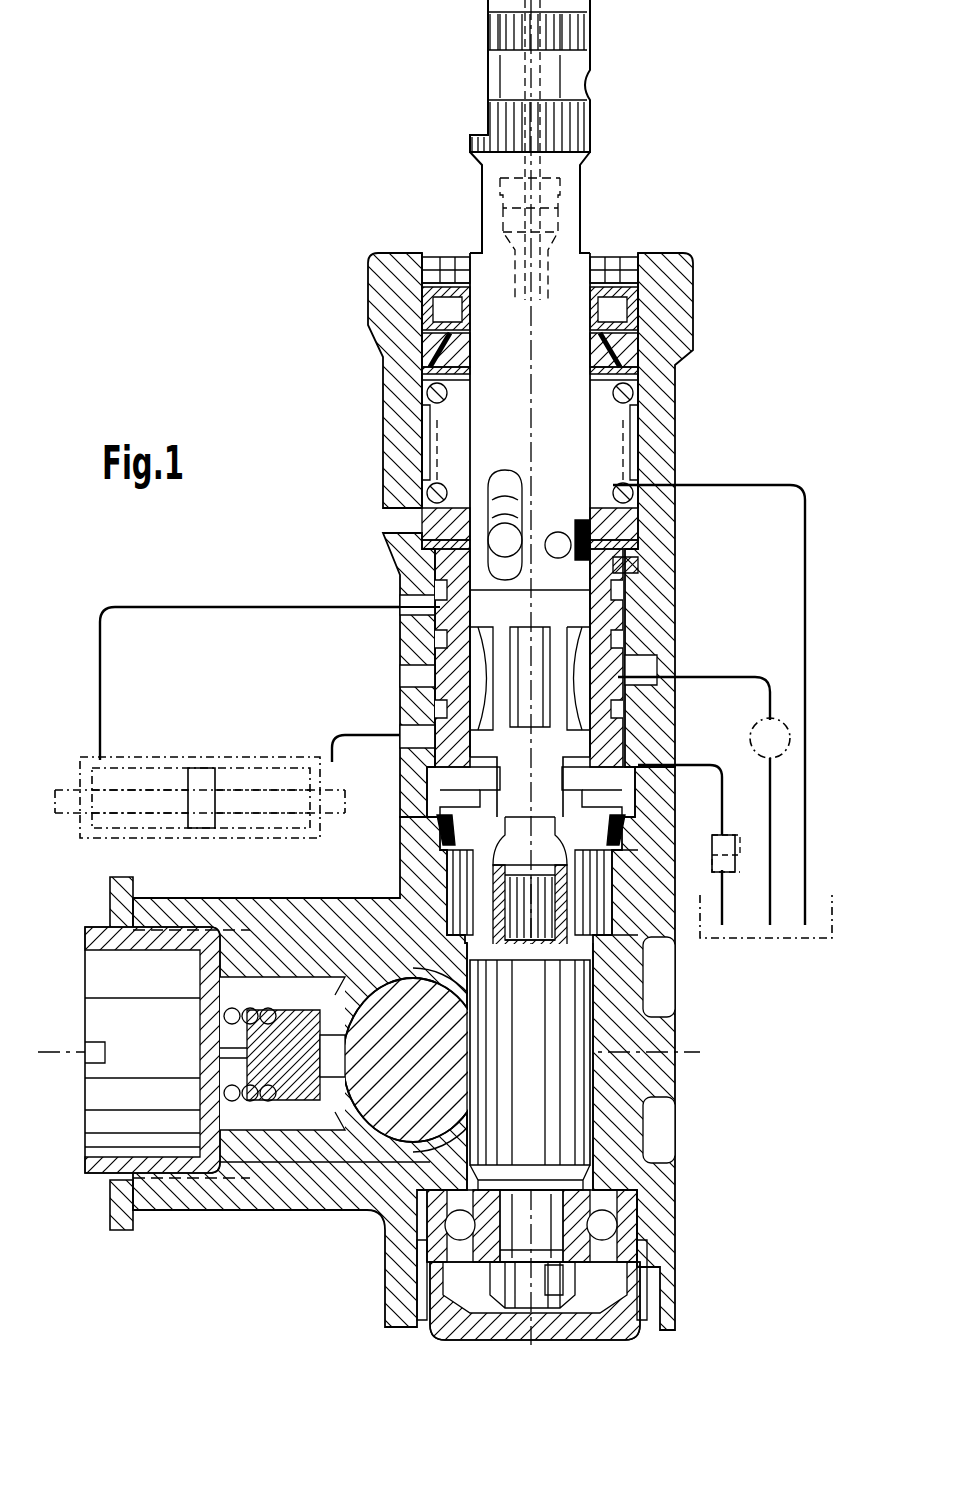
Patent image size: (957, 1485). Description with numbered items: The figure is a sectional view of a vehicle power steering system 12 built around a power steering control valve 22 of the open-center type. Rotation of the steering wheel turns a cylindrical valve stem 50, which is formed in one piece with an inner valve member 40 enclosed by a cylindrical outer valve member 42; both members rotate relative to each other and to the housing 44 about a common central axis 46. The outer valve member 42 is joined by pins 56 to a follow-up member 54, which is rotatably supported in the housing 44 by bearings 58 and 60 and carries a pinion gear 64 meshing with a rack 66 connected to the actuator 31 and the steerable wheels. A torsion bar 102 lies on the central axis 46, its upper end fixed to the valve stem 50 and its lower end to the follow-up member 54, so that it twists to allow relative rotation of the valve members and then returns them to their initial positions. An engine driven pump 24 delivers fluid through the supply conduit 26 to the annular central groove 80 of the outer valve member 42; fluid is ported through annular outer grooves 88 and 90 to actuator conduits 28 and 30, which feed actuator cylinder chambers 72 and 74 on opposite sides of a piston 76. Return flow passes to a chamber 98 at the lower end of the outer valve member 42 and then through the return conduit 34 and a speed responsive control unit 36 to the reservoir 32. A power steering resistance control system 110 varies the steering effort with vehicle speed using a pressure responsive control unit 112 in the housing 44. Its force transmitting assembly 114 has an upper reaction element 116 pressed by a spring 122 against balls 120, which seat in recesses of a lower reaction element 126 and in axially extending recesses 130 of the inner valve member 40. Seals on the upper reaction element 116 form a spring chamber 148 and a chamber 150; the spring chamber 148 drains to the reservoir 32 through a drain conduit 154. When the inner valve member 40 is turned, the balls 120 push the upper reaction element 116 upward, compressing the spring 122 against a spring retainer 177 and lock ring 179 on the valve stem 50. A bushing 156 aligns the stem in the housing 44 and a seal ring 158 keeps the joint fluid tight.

The vehicle power steering system 12 is at (178, 218).
The power steering control valve 22 is at (305, 208).
The engine driven pump 24 is at (752, 735).
The supply conduit 26 is at (690, 675).
The actuator conduit 28 is at (95, 700).
The actuator conduit 30 is at (325, 735).
The actuator 31 is at (210, 750).
The reservoir 32 is at (770, 940).
The return conduit 34 is at (690, 795).
The speed responsive control unit 36 is at (735, 850).
The inner valve member 40 is at (600, 434).
The outer valve member 42 is at (628, 655).
The housing 44 is at (405, 330).
The central axis 46 is at (500, 180).
The valve stem 50 is at (568, 202).
The follow-up member 54 is at (475, 890).
The pins 56 is at (440, 812).
The bearing 58 is at (600, 905).
The bearing 60 is at (605, 1225).
The pinion gear 64 is at (590, 1110).
The rack 66 is at (387, 1090).
The actuator cylinder chamber 72 is at (152, 778).
The actuator cylinder chamber 74 is at (250, 778).
The piston 76 is at (220, 830).
The annular central groove 80 is at (445, 668).
The annular outer groove 88 is at (445, 624).
The annular outer groove 90 is at (445, 700).
The chamber 98 is at (440, 775).
The torsion bar 102 is at (515, 440).
The power steering resistance control system 110 is at (365, 458).
The pressure responsive control unit 112 is at (425, 508).
The force transmitting assembly 114 is at (435, 534).
The upper reaction element 116 is at (620, 533).
The balls 120 is at (562, 530).
The spring 122 is at (630, 392).
The lower reaction element 126 is at (625, 563).
The axially extending recesses 130 is at (500, 475).
The spring chamber 148 is at (458, 428).
The chamber 150 is at (448, 558).
The drain conduit 154 is at (800, 605).
The bushing 156 is at (635, 350).
The seal ring 158 is at (605, 280).
The spring retainer 177 is at (410, 372).
The lock ring 179 is at (650, 375).